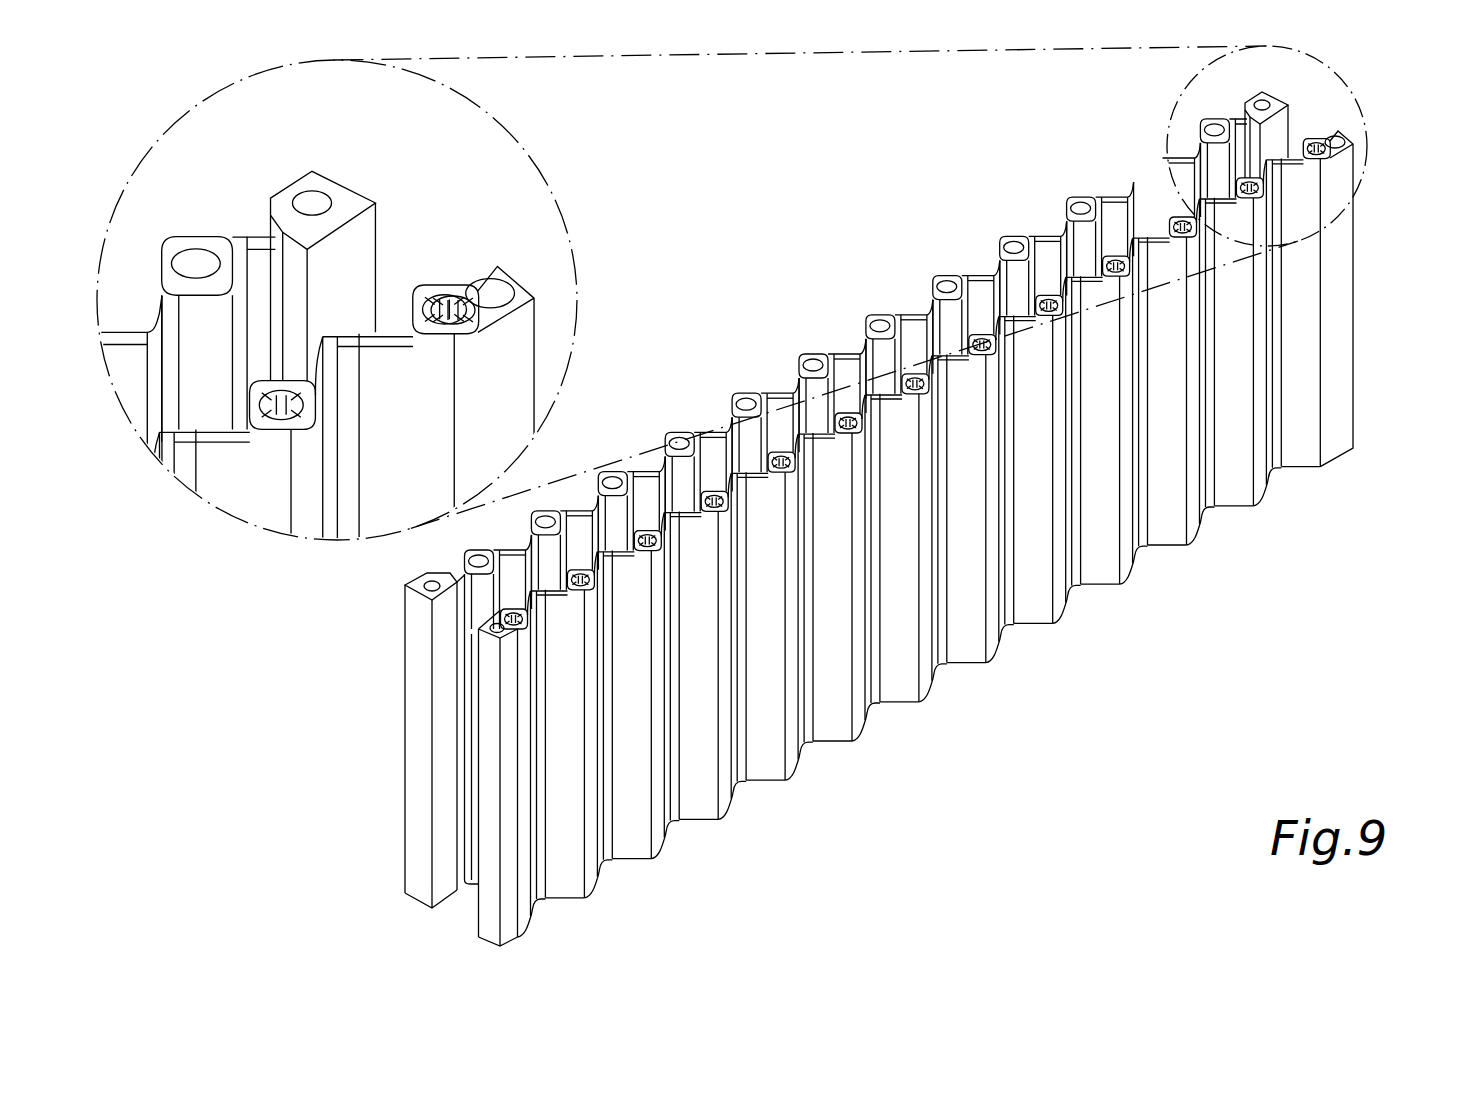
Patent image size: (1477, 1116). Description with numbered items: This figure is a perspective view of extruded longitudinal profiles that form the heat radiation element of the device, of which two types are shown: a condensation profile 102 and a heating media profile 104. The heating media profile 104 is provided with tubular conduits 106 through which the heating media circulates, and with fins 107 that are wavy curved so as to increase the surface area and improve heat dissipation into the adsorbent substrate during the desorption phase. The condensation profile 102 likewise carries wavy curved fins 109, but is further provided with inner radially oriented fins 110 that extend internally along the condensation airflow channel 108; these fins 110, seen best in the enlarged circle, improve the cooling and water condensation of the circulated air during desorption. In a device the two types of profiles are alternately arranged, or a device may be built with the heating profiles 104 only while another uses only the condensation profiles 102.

The condensation profile 102 is at (892, 518).
The heating media profile 104 is at (405, 683).
The tubular conduit 106 is at (975, 283).
The fin 107 is at (1070, 232).
The condensation airflow channel 108 is at (1340, 133).
The fin 109 is at (940, 352).
The inner radially oriented fin 110 is at (455, 296).